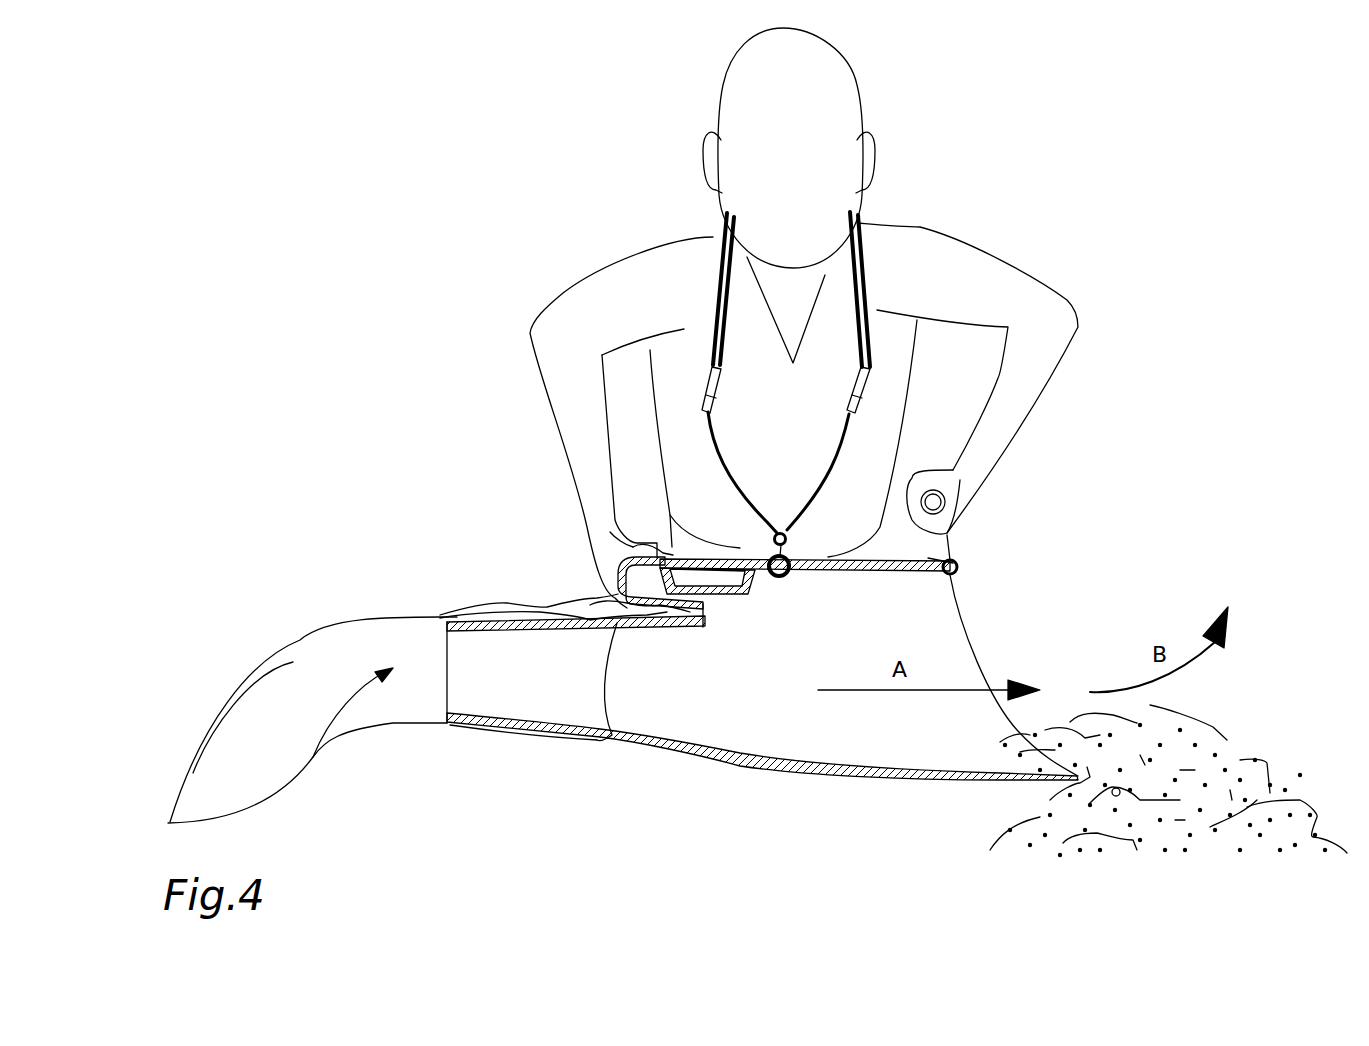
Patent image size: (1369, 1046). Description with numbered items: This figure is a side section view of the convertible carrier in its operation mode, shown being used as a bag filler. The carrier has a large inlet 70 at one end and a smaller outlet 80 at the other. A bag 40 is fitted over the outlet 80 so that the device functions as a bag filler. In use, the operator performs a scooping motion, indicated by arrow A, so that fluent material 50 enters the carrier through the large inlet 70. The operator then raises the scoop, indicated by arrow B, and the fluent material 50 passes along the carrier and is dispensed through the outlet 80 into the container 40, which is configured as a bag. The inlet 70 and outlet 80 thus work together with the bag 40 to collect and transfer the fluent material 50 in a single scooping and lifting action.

The bag 40 is at (355, 618).
The fluent material 50 is at (1213, 788).
The inlet 70 is at (1052, 589).
The outlet 80 is at (465, 678).